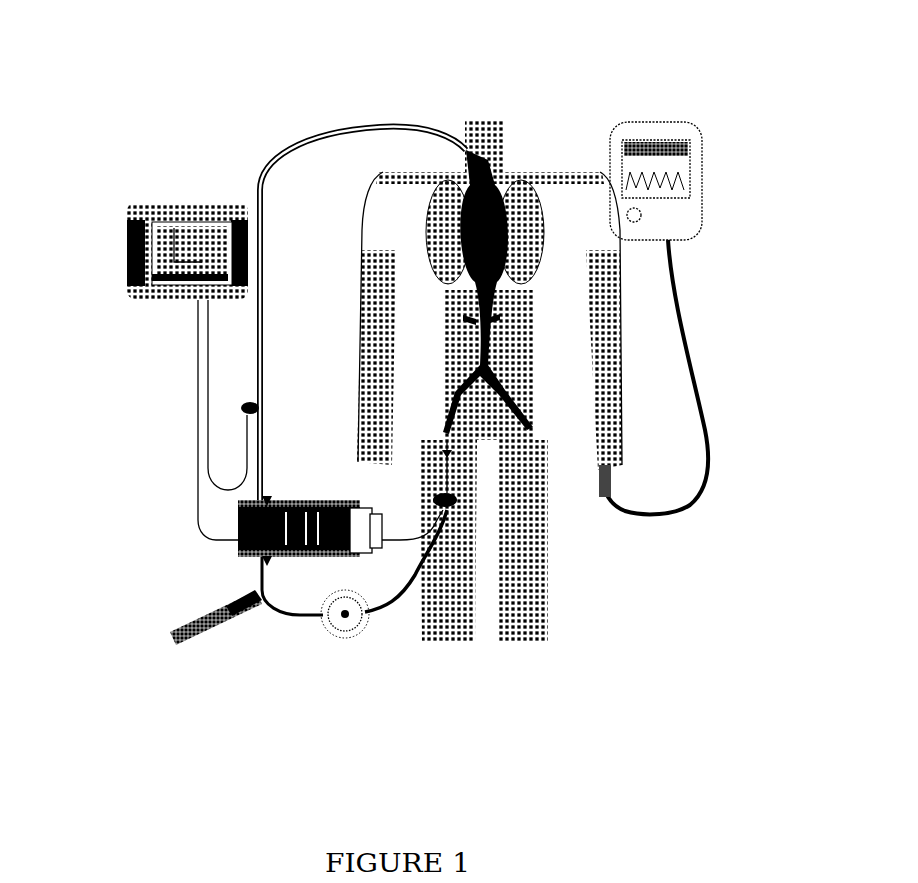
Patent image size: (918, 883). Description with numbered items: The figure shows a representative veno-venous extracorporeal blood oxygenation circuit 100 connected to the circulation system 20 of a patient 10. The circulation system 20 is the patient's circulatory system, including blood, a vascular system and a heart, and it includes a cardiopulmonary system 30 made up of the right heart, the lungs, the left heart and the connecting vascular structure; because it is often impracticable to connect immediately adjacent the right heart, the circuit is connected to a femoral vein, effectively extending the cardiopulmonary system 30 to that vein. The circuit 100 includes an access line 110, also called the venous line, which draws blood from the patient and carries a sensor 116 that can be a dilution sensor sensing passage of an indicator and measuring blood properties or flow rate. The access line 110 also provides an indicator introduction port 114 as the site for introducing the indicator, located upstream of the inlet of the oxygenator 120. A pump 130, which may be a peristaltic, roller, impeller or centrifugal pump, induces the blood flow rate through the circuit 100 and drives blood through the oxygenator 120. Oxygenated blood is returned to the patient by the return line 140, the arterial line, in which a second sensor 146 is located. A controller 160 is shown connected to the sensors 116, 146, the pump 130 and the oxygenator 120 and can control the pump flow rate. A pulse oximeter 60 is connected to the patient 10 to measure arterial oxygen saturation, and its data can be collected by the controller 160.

The patient 10 is at (472, 124).
The circulation system 20 is at (507, 341).
The cardiopulmonary system 30 is at (513, 187).
The pulse oximeter 60 is at (702, 217).
The extracorporeal blood oxygenation circuit 100 is at (361, 101).
The access line 110 is at (423, 568).
The indicator introduction port 114 is at (260, 606).
The sensor 116 is at (450, 512).
The oxygenator 120 is at (240, 552).
The pump 130 is at (333, 640).
The return line 140 is at (277, 138).
The sensor 146 is at (267, 372).
The controller 160 is at (125, 228).